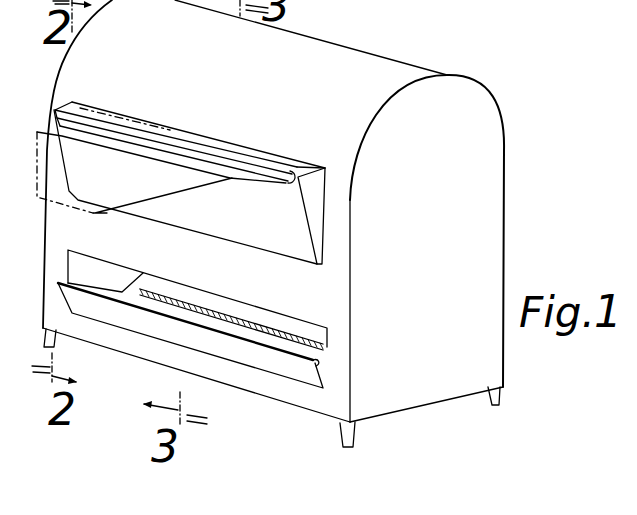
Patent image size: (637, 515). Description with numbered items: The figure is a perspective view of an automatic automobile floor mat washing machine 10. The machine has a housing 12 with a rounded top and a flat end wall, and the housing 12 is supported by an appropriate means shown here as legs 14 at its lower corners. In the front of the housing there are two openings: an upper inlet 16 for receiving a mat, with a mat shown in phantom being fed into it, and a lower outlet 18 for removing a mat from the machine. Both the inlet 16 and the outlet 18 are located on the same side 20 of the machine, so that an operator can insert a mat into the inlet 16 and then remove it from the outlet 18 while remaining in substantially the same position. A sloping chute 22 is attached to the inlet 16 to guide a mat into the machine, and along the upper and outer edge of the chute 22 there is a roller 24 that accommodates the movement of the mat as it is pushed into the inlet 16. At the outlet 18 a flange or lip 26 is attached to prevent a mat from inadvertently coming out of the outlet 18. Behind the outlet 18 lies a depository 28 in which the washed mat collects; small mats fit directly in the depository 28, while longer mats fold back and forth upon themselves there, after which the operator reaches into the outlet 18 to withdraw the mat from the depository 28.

The automatic automobile floor mat washing machine 10 is at (496, 98).
The housing 12 is at (493, 223).
The legs 14 is at (500, 395).
The inlet 16 is at (299, 170).
The outlet 18 is at (273, 317).
The side 20 is at (340, 273).
The chute 22 is at (316, 223).
The roller 24 is at (84, 114).
The flange or lip 26 is at (318, 363).
The depository 28 is at (313, 343).